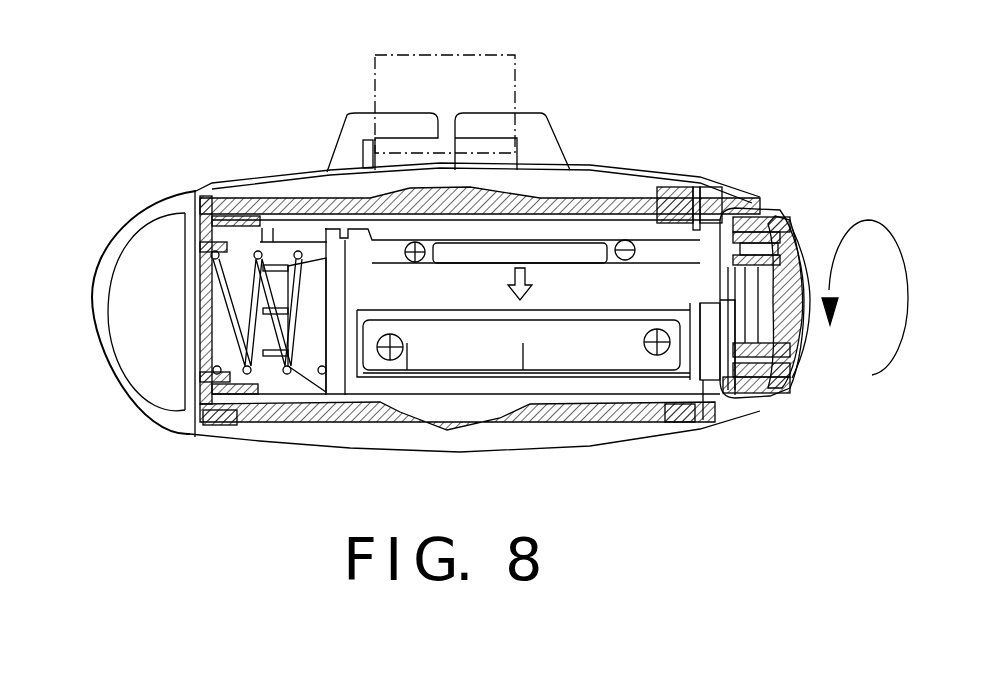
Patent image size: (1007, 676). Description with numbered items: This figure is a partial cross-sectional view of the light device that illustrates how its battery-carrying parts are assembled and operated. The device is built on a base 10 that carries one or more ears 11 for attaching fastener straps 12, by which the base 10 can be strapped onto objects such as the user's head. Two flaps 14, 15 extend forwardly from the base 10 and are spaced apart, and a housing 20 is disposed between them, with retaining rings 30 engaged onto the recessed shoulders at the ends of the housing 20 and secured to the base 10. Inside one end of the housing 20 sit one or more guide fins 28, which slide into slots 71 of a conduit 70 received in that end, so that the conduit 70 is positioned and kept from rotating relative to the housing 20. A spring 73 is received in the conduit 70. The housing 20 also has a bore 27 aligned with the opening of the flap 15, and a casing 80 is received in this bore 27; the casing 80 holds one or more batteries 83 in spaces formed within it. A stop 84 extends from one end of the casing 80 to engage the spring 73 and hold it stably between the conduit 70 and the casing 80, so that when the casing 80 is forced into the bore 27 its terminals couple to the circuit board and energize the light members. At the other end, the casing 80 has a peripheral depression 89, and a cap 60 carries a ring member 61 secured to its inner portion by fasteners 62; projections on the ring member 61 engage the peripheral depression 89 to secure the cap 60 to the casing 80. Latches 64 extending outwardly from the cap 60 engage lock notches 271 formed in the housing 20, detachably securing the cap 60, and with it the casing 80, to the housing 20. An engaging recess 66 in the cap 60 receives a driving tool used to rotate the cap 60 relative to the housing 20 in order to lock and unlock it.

The base 10 is at (225, 185).
The ear 11 is at (392, 158).
The fastener strap 12 is at (375, 70).
The flap 14 is at (189, 383).
The flap 15 is at (703, 420).
The housing 20 is at (588, 197).
The bore 27 is at (480, 395).
The guide fin 28 is at (293, 207).
The retaining ring 30 is at (227, 425).
The cap 60 is at (795, 380).
The ring member 61 is at (733, 227).
The fastener 62 is at (767, 237).
The latch 64 is at (750, 217).
The engaging recess 66 is at (806, 281).
The conduit 70 is at (773, 305).
The slot 71 is at (267, 207).
The spring 73 is at (200, 360).
The casing 80 is at (380, 253).
The battery 83 is at (427, 370).
The stop 84 is at (295, 294).
The peripheral depression 89 is at (740, 393).
The lock notch 271 is at (679, 207).